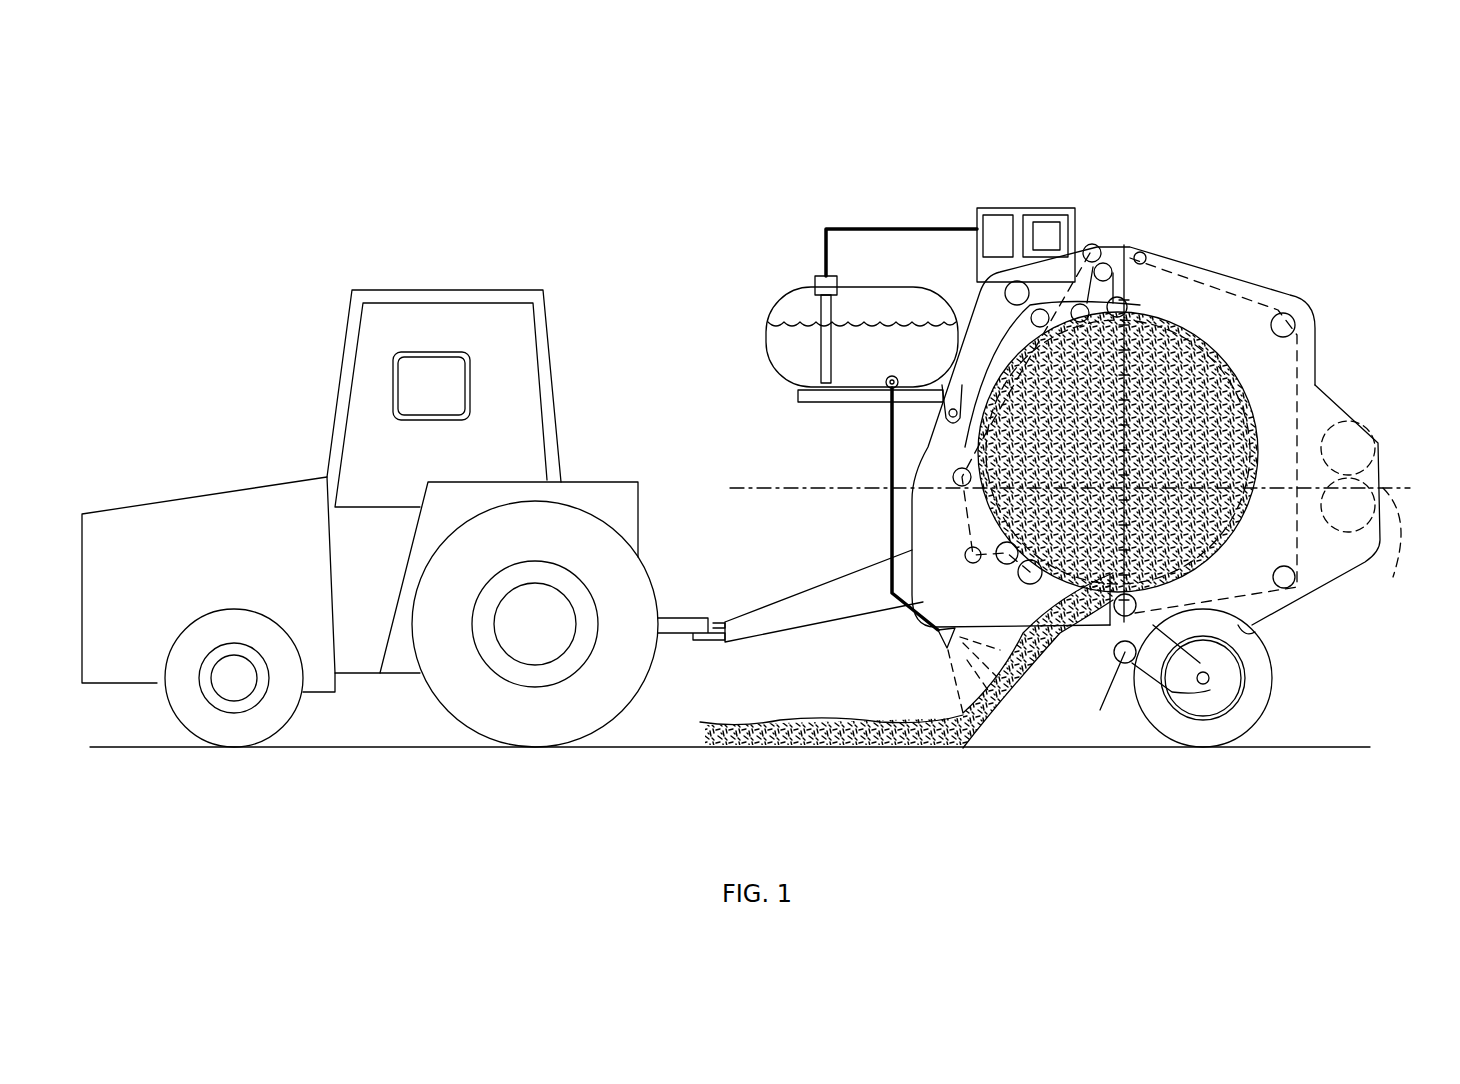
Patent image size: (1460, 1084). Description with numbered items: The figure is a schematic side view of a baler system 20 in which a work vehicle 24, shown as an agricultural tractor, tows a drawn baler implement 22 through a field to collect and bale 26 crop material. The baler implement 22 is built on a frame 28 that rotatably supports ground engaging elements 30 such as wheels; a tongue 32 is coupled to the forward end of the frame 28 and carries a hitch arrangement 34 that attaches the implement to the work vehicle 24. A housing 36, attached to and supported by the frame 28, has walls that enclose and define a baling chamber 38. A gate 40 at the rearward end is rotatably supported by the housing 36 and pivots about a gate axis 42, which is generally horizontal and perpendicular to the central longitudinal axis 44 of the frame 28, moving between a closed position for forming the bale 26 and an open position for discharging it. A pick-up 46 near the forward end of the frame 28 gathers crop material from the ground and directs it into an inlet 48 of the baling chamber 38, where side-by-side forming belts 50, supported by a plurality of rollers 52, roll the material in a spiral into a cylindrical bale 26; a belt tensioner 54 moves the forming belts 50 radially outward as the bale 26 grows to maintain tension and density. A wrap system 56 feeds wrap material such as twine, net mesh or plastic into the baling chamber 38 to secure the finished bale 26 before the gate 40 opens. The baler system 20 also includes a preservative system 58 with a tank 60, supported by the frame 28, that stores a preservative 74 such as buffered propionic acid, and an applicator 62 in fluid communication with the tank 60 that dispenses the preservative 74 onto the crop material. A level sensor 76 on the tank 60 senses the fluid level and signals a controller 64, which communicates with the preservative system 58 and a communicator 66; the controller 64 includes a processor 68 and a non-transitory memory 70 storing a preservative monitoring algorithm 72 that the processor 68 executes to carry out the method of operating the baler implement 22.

The baler system 20 is at (724, 172).
The baler implement 22 is at (1294, 262).
The work vehicle 24 is at (458, 243).
The bale 26 is at (1175, 350).
The frame 28 is at (1260, 635).
The ground engaging elements 30 is at (1262, 687).
The tongue 32 is at (748, 620).
The hitch arrangement 34 is at (705, 640).
The housing 36 is at (1205, 272).
The baling chamber 38 is at (1227, 383).
The gate 40 is at (1317, 372).
The gate axis 42 is at (1127, 250).
The central longitudinal axis 44 is at (1390, 548).
The pick-up 46 is at (1010, 760).
The inlet 48 is at (1040, 596).
The forming belts 50 is at (1298, 400).
The rollers 52 is at (995, 290).
The belt tensioner 54 is at (975, 300).
The wrap system 56 is at (1380, 458).
The preservative system 58 is at (750, 302).
The tank 60 is at (775, 380).
The applicator 62 is at (935, 637).
The controller 64 is at (977, 210).
The communicator 66 is at (446, 394).
The processor 68 is at (998, 215).
The memory 70 is at (1045, 215).
The preservative monitoring algorithm 72 is at (1050, 230).
The preservative 74 is at (793, 325).
The level sensor 76 is at (813, 280).